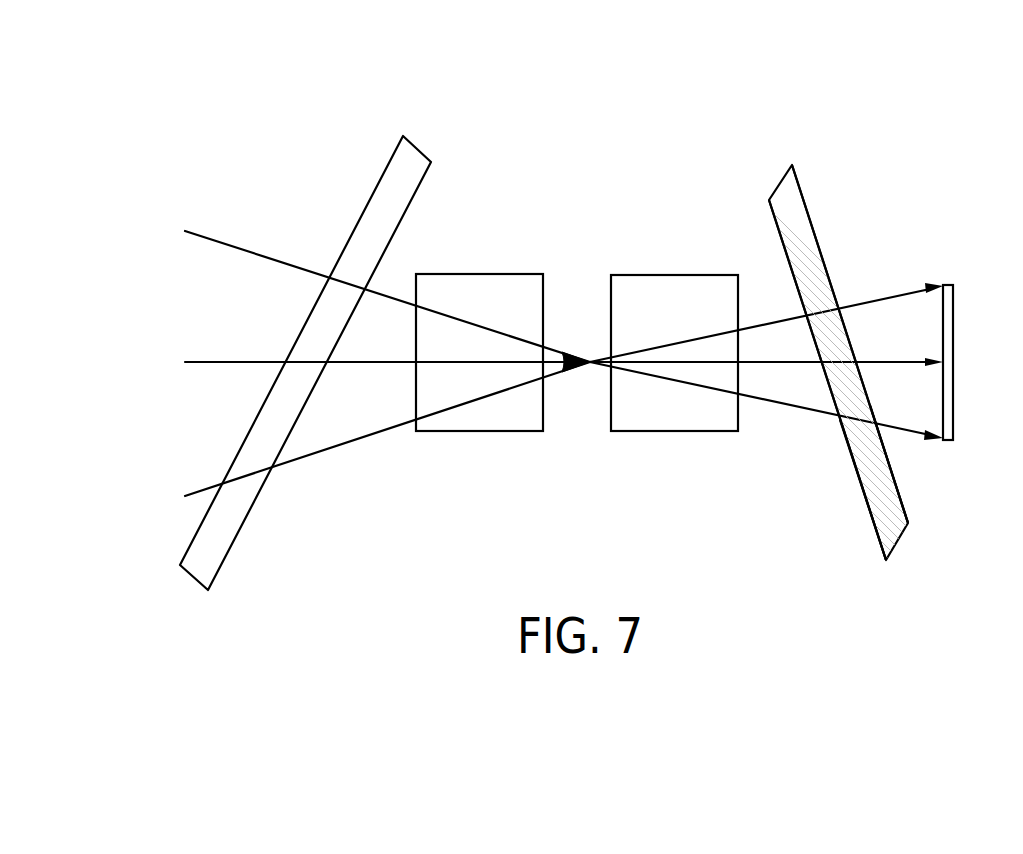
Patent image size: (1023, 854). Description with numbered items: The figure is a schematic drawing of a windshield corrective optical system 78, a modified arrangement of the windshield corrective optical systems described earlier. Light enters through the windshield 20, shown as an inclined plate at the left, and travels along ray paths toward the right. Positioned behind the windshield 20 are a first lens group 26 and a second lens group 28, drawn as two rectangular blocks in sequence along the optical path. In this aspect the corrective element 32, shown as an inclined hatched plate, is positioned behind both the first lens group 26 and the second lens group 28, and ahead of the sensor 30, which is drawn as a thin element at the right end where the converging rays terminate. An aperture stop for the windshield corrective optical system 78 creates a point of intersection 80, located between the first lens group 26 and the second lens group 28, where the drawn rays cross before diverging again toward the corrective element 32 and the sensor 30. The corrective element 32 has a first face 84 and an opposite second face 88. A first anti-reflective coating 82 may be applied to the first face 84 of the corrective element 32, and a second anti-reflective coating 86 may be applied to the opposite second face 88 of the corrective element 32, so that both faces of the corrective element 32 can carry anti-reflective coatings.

The windshield 20 is at (397, 181).
The first lens group 26 is at (480, 418).
The second lens group 28 is at (667, 410).
The sensor 30 is at (950, 341).
The corrective element 32 is at (803, 228).
The windshield corrective optical system 78 is at (672, 104).
The point of intersection 80 is at (580, 349).
The first anti-reflective coating 82 is at (868, 510).
The first face 84 is at (834, 464).
The second anti-reflective coating 86 is at (905, 508).
The second face 88 is at (912, 465).